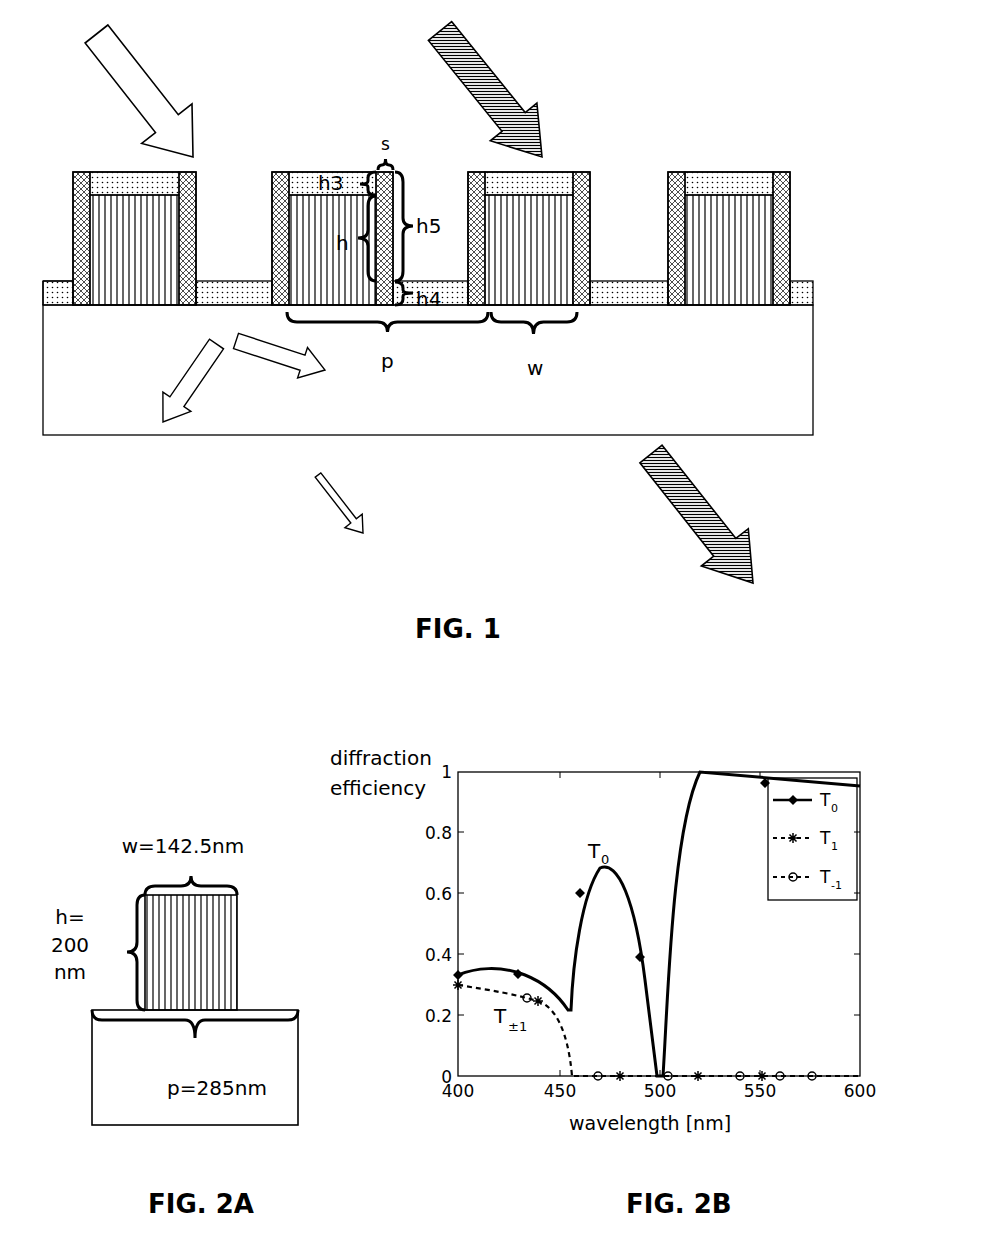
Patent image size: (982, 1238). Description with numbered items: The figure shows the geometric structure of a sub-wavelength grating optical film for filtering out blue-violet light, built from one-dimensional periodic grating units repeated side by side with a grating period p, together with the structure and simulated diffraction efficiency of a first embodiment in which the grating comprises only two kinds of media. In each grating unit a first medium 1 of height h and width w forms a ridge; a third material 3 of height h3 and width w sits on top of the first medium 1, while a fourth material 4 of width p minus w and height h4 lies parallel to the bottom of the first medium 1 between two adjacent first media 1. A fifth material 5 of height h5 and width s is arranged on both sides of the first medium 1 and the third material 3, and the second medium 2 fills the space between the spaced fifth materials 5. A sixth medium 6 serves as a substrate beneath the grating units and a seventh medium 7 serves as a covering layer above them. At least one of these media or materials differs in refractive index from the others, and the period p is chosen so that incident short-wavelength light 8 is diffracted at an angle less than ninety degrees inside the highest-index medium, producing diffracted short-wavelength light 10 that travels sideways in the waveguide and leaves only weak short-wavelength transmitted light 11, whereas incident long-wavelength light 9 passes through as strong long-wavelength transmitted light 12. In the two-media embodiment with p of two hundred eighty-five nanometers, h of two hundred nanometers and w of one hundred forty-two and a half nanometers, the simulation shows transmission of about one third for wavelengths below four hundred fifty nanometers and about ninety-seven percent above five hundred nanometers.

The first medium 1 is at (720, 270).
The second medium 2 is at (647, 240).
The third material 3 is at (720, 180).
The fourth material 4 is at (797, 297).
The fifth material 5 is at (782, 212).
The sixth medium 6 is at (720, 340).
The seventh medium 7 is at (720, 142).
The incident short-wavelength light 8 is at (139, 91).
The incident long-wavelength light 9 is at (485, 89).
The diffracted short-wavelength light 10 is at (244, 377).
The weak short-wavelength transmitted light 11 is at (356, 503).
The strong long-wavelength transmitted light 12 is at (682, 514).